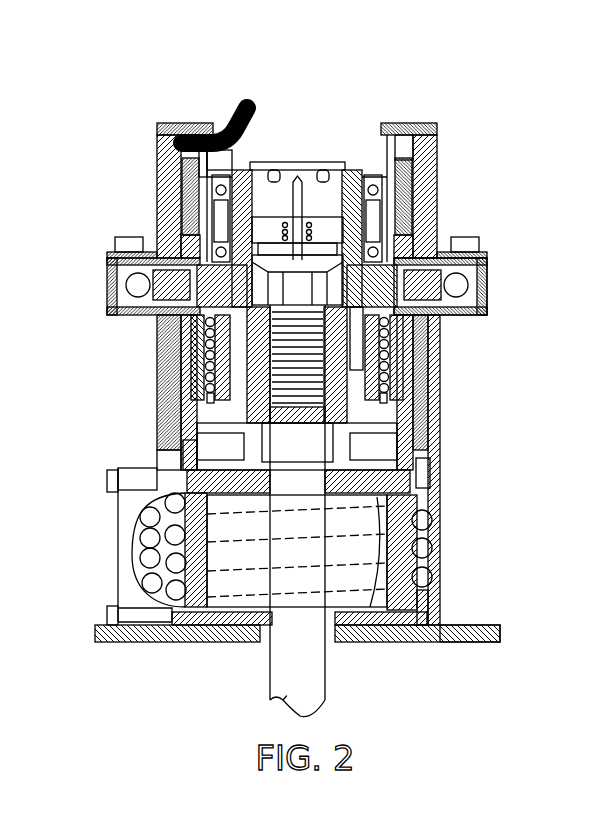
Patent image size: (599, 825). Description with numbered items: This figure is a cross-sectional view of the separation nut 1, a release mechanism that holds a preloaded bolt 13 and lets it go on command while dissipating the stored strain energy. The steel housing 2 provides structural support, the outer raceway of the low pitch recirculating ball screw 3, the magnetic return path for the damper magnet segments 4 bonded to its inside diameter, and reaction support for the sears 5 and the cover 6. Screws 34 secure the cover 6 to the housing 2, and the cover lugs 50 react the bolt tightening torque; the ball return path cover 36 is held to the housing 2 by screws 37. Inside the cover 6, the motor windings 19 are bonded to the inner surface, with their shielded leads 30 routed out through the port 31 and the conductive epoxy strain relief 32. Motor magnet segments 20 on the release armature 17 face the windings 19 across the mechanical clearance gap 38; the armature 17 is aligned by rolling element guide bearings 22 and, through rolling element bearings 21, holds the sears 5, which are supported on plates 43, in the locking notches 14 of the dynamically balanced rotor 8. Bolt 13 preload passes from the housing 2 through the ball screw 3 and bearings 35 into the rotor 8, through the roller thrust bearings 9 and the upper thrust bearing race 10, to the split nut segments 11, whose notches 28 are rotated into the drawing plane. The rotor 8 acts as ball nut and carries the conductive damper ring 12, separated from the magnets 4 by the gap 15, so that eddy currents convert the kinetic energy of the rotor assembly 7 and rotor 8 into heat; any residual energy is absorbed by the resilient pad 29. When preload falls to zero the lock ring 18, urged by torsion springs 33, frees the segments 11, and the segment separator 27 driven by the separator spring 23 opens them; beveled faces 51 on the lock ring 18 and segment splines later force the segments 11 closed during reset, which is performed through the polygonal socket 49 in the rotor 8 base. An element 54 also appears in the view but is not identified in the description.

The separation nut 1 is at (484, 522).
The housing 2 is at (437, 478).
The ball screw 3 is at (137, 573).
The damper magnet segments 4 is at (437, 400).
The sears 5 is at (145, 313).
The cover 6 is at (160, 138).
The rotor assembly 7 is at (163, 440).
The dynamically balanced rotor 8 is at (160, 458).
The roller thrust bearings 9 is at (437, 420).
The upper thrust bearing race 10 is at (157, 410).
The split nut segments 11 is at (437, 362).
The damper ring 12 is at (437, 490).
The bolt 13 is at (325, 688).
The locking notches 14 is at (488, 270).
The gap 15 is at (437, 380).
The release armature 17 is at (215, 218).
The lock ring 18 is at (440, 332).
The motor windings 19 is at (188, 192).
The motor magnet segments 20 is at (170, 175).
The rolling element bearings 21 is at (130, 290).
The rolling element guide bearings 22 is at (397, 137).
The separator spring 23 is at (437, 193).
The segment separator 27 is at (437, 212).
The split nut segment notches 28 is at (158, 362).
The resilient pad 29 is at (167, 642).
The leads 30 is at (251, 100).
The port 31 is at (212, 122).
The conductive epoxy strain relief 32 is at (221, 138).
The torsion springs 33 is at (155, 385).
The screws 34 is at (481, 243).
The bearings 35 is at (430, 562).
The ball return path cover 36 is at (118, 547).
The screws 37 is at (103, 480).
The mechanical clearance gap 38 is at (425, 140).
The plates 43 is at (107, 300).
The polygonal socket 49 is at (370, 640).
The cover lugs 50 is at (437, 248).
The beveled faces 51 is at (305, 162).
The base 54 is at (470, 642).